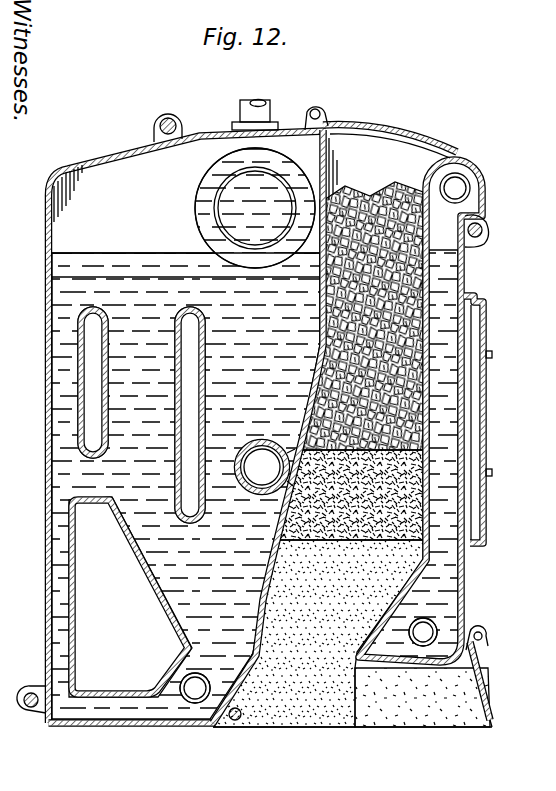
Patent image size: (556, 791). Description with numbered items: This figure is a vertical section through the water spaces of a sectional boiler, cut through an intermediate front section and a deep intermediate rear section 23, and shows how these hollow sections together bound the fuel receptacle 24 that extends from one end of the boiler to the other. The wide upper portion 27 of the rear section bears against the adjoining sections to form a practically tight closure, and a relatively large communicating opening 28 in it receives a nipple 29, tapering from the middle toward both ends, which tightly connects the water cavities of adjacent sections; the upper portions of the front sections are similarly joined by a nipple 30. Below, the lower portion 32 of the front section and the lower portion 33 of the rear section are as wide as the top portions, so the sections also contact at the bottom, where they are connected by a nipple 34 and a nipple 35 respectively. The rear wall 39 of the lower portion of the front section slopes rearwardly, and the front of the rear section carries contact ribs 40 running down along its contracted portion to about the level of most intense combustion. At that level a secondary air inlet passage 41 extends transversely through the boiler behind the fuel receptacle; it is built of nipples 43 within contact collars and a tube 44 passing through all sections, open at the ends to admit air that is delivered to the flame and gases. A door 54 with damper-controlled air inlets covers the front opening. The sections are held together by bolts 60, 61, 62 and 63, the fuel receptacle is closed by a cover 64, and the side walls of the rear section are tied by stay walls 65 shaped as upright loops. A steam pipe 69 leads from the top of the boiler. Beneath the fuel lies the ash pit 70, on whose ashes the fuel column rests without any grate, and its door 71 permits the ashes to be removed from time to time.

The intermediate rear section 23 is at (45, 294).
The fuel receptacle 24 is at (350, 339).
The upper portion of rear section 27 is at (98, 193).
The communicating opening 28 is at (215, 196).
The nipple 29 is at (218, 216).
The nipple 30 is at (470, 186).
The lower portion of front section 32 is at (464, 612).
The lower portion of rear section 33 is at (182, 660).
The nipple 34 is at (438, 630).
The nipple 35 is at (180, 684).
The rear wall of lower portion of front section 39 is at (382, 628).
The contact rib 40 is at (320, 312).
The secondary air inlet passage 41 is at (267, 467).
The nipple 43 is at (266, 438).
The tube 44 is at (258, 487).
The door 54 is at (487, 388).
The bolt 60 is at (180, 120).
The bolt 61 is at (486, 230).
The bolt 62 is at (31, 692).
The bolt 63 is at (231, 721).
The cover 64 is at (428, 138).
The stay wall 65 is at (174, 368).
The steam pipe 69 is at (270, 110).
The ash pit 70 is at (352, 633).
The door 71 is at (492, 680).